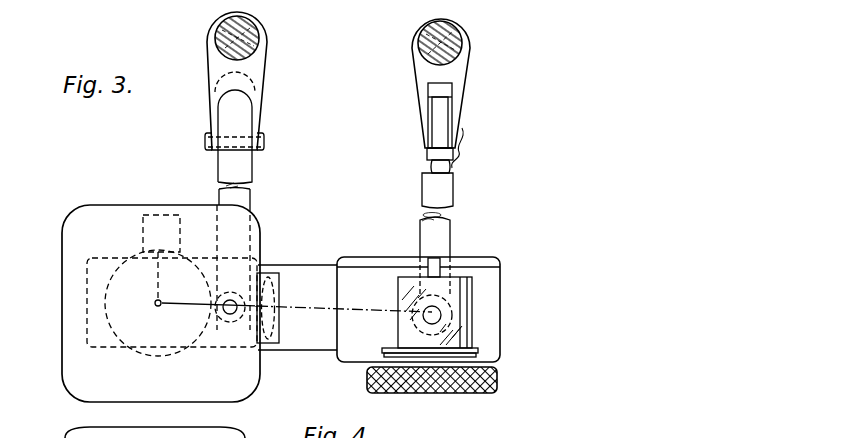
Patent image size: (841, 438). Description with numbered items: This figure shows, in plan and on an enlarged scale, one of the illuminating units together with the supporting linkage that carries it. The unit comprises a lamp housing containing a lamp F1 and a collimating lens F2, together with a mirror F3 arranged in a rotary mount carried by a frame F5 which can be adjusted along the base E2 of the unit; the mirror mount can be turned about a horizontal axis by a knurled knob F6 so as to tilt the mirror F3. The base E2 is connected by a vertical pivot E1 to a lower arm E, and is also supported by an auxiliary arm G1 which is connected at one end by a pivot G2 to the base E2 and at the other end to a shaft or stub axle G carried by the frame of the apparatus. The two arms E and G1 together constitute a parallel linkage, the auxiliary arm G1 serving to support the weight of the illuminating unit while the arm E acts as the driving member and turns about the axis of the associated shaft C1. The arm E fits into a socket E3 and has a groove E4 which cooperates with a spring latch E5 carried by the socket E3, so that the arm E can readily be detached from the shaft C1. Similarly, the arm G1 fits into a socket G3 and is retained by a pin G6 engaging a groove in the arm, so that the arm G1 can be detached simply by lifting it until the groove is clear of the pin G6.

The shaft or stub axle G is at (258, 40).
The auxiliary arm G1 is at (237, 165).
The pivot G2 is at (232, 313).
The socket G3 is at (260, 96).
The pin G6 is at (262, 144).
The shaft C1 is at (462, 47).
The lower arm E is at (435, 238).
The vertical pivot E1 is at (457, 305).
The base E2 is at (310, 282).
The socket E3 is at (455, 101).
The groove E4 is at (430, 167).
The spring latch E5 is at (450, 165).
The lamp F1 is at (132, 345).
The collimating lens F2 is at (279, 343).
The mirror F3 is at (443, 342).
The frame F5 is at (482, 365).
The knurled knob F6 is at (492, 382).